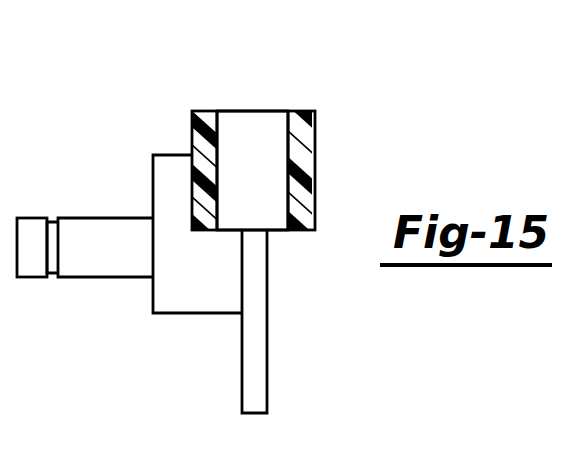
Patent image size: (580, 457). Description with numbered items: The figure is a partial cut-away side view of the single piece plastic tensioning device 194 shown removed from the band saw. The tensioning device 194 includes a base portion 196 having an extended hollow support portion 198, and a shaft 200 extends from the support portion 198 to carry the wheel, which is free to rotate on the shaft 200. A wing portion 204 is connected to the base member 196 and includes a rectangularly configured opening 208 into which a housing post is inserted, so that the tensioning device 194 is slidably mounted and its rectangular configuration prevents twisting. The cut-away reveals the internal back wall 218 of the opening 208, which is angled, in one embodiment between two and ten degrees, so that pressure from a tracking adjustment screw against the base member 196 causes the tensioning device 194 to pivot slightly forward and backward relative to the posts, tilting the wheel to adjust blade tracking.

The tensioning device 194 is at (189, 68).
The base portion 196 is at (254, 320).
The extended hollow support portion 198 is at (195, 292).
The shaft 200 is at (102, 227).
The wing portion 204 is at (202, 147).
The opening 208 is at (218, 150).
The internal back wall 218 is at (292, 168).